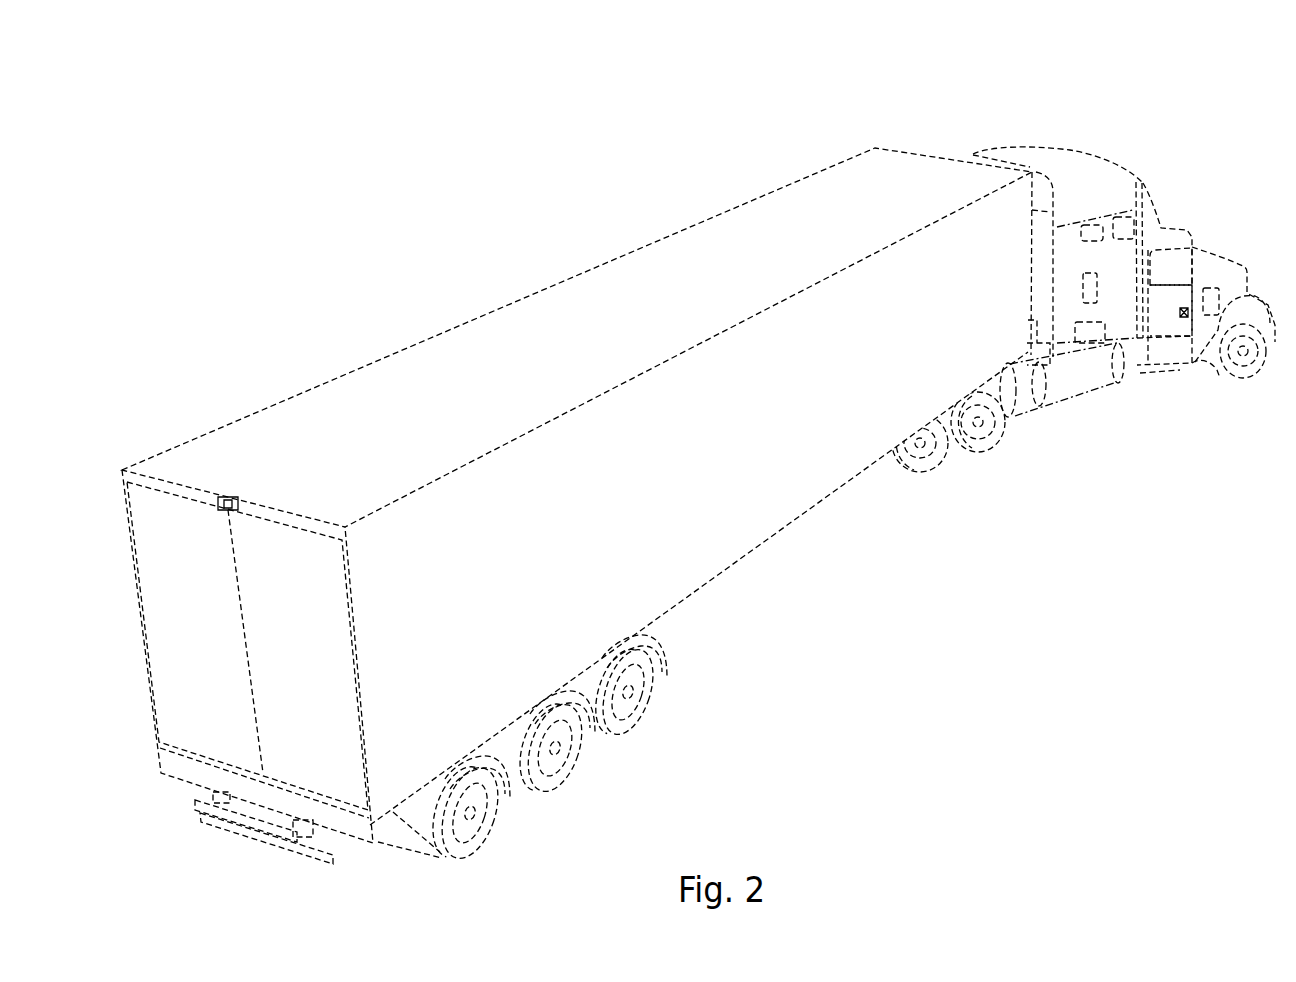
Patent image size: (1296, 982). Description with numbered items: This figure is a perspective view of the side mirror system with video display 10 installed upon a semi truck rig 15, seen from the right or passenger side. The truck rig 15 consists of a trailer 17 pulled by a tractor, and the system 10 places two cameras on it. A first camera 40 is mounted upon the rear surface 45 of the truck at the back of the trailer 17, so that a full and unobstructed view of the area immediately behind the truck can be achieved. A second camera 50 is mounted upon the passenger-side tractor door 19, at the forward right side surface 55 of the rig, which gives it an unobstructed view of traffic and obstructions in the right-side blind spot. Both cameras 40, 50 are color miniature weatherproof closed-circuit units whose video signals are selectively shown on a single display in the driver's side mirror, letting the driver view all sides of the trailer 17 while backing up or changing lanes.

The side mirror system with video display 10 is at (212, 132).
The semi truck rig 15 is at (880, 543).
The trailer 17 is at (730, 245).
The tractor door 19 is at (1164, 313).
The first camera 40 is at (225, 497).
The rear surface 45 is at (226, 697).
The second camera 50 is at (1186, 311).
The forward right side surface 55 is at (1118, 292).